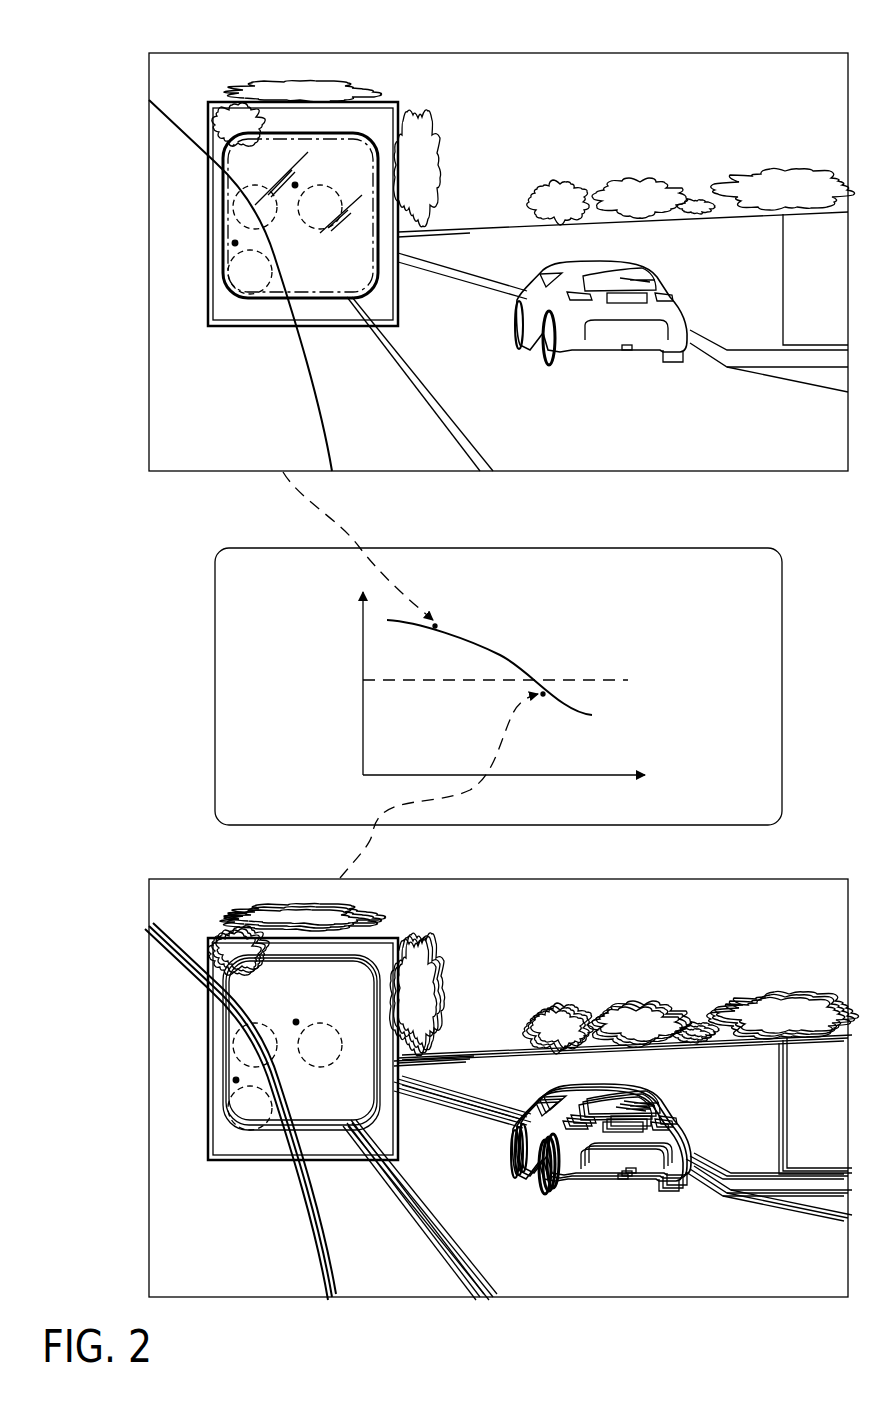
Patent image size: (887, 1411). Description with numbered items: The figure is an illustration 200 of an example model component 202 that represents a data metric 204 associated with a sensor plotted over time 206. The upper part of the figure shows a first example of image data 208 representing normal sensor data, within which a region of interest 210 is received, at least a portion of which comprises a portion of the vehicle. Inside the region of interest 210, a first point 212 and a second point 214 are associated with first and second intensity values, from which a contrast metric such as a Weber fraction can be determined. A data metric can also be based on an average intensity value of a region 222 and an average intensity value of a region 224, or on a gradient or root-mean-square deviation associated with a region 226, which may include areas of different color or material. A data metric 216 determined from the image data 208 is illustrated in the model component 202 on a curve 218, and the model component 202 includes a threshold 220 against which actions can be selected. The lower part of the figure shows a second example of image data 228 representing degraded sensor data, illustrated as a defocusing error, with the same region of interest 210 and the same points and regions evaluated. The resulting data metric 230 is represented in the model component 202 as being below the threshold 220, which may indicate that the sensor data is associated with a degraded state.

The illustration 200 is at (120, 11).
The model component 202 is at (598, 577).
The data metric 204 is at (363, 658).
The time 206 is at (557, 775).
The image data 208 is at (149, 82).
The region of interest 210 is at (260, 327).
The first point 212 is at (226, 243).
The second point 214 is at (302, 178).
The data metric 216 is at (433, 633).
The curve 218 is at (498, 652).
The threshold 220 is at (624, 666).
The region 222 is at (228, 280).
The region 224 is at (338, 192).
The region 226 is at (233, 209).
The image data 228 is at (149, 895).
The data metric 230 is at (543, 703).